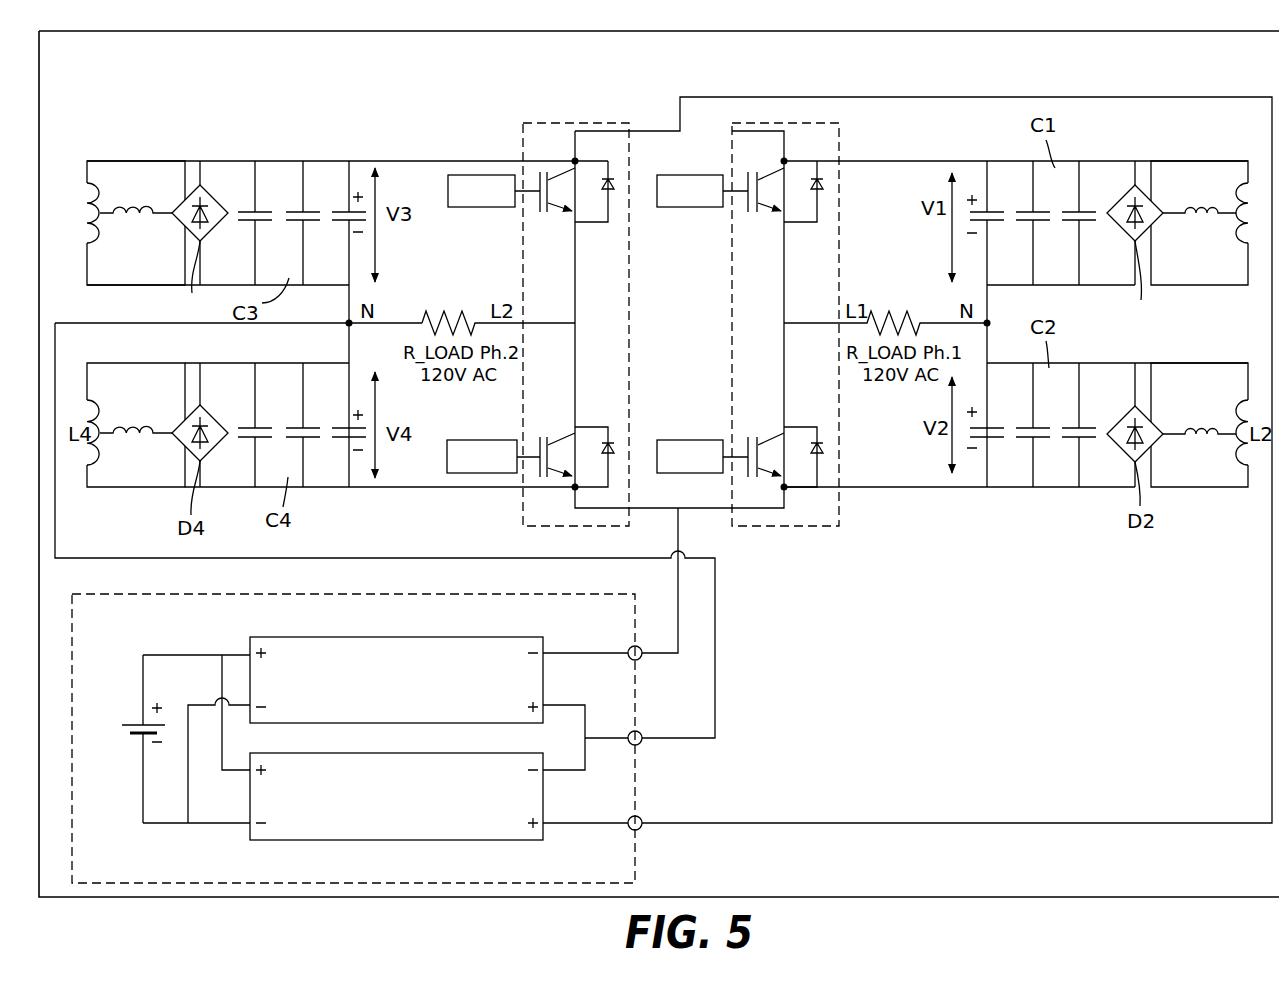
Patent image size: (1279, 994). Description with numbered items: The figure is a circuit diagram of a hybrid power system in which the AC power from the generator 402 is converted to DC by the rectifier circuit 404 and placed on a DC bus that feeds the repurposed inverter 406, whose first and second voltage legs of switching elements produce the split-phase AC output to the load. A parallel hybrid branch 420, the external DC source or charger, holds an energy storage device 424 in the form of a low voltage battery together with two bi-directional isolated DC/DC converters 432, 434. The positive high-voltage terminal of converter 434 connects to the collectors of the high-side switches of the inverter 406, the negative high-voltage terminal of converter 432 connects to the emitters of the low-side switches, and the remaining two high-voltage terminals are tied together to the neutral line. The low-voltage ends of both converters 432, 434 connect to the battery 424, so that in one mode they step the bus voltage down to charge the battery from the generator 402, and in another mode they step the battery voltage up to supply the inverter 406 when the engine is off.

The generator 402 is at (92, 137).
The rectifier circuit 404 is at (192, 151).
The inverter 406 is at (548, 123).
The parallel hybrid branch 420 is at (357, 738).
The energy storage device 424 is at (143, 717).
The bi-directional isolated DC/DC converter 432 is at (462, 637).
The bi-directional isolated DC/DC converter 434 is at (462, 840).